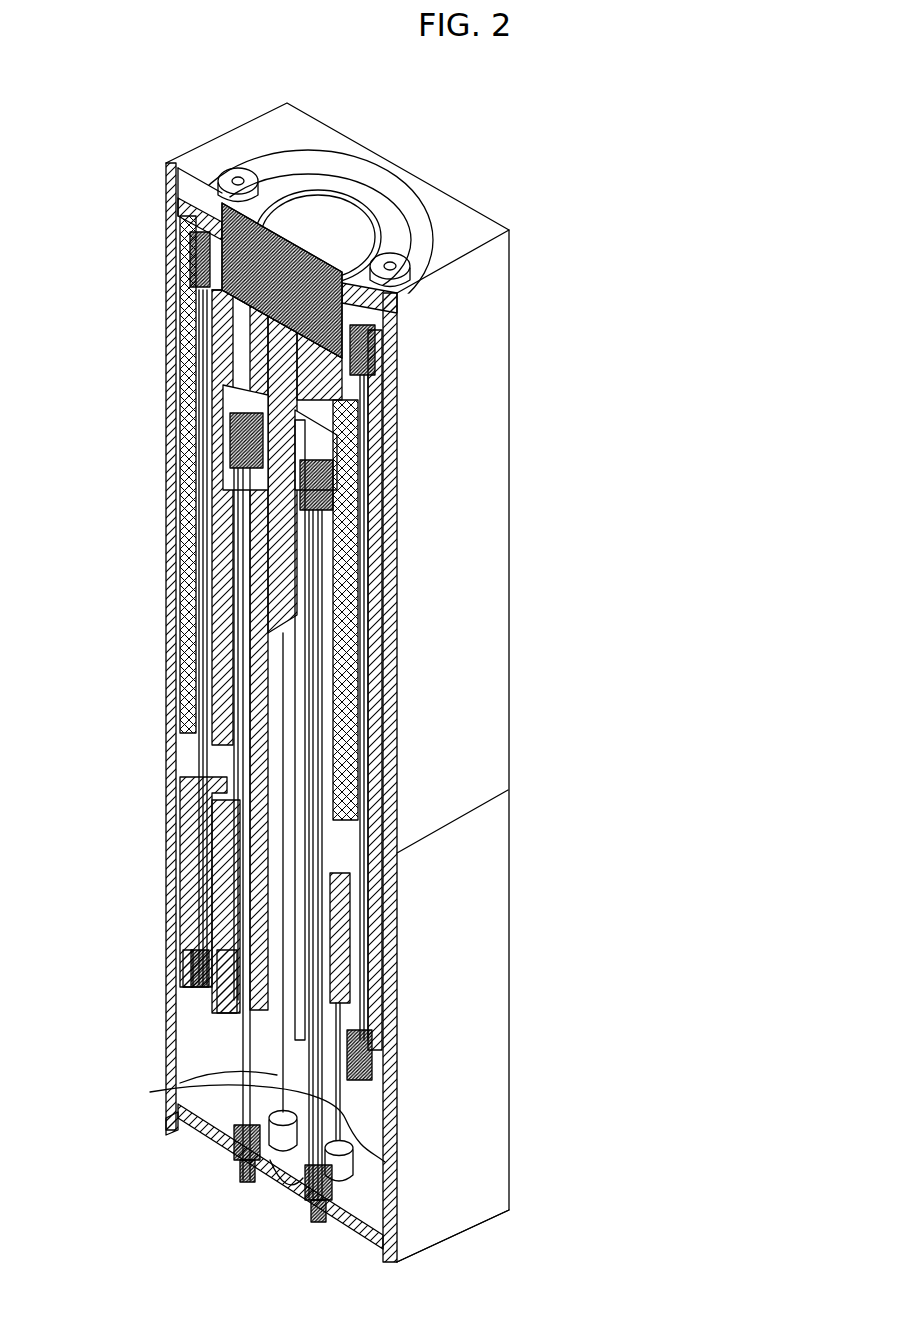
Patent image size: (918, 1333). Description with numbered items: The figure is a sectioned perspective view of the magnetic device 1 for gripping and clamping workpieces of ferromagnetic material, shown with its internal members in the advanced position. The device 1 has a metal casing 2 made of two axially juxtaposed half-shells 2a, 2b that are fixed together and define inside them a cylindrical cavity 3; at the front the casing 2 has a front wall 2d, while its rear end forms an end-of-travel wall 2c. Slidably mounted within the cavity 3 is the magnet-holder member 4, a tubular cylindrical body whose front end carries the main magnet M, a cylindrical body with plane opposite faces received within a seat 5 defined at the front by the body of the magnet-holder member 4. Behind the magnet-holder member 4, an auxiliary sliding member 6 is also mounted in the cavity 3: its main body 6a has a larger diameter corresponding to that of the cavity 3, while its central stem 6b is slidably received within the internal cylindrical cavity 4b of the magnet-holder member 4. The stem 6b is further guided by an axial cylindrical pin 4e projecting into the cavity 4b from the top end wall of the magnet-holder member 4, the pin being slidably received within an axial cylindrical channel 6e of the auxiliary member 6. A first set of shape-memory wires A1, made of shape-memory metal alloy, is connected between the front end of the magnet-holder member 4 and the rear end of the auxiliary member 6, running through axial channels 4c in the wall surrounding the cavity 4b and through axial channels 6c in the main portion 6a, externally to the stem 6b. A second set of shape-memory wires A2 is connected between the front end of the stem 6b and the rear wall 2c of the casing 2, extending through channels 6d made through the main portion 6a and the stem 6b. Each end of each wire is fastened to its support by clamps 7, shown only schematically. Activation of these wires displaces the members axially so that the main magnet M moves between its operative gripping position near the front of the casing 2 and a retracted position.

The magnetic device 1 is at (376, 675).
The casing 2 is at (353, 682).
The half-shell 2a is at (487, 540).
The half-shell 2b is at (487, 1110).
The end-of-travel wall 2c is at (220, 1115).
The front wall 2d is at (398, 222).
The cylindrical cavity 3 is at (200, 1045).
The magnet-holder member 4 is at (260, 670).
The internal cylindrical cavity 4b is at (192, 405).
The axial channel 4c is at (205, 488).
The axial cylindrical pin 4e is at (262, 645).
The seat 5 is at (238, 250).
The auxiliary sliding member 6 is at (246, 745).
The main body 6a is at (225, 842).
The central stem 6b is at (262, 576).
The axial channel 6c is at (200, 922).
The channel 6d is at (248, 877).
The axial cylindrical channel 6e is at (285, 712).
The clamp 7 is at (240, 178).
The main magnet M is at (345, 217).
The first set of shape-memory wires A1 is at (176, 298).
The second set of shape-memory wires A2 is at (180, 1083).